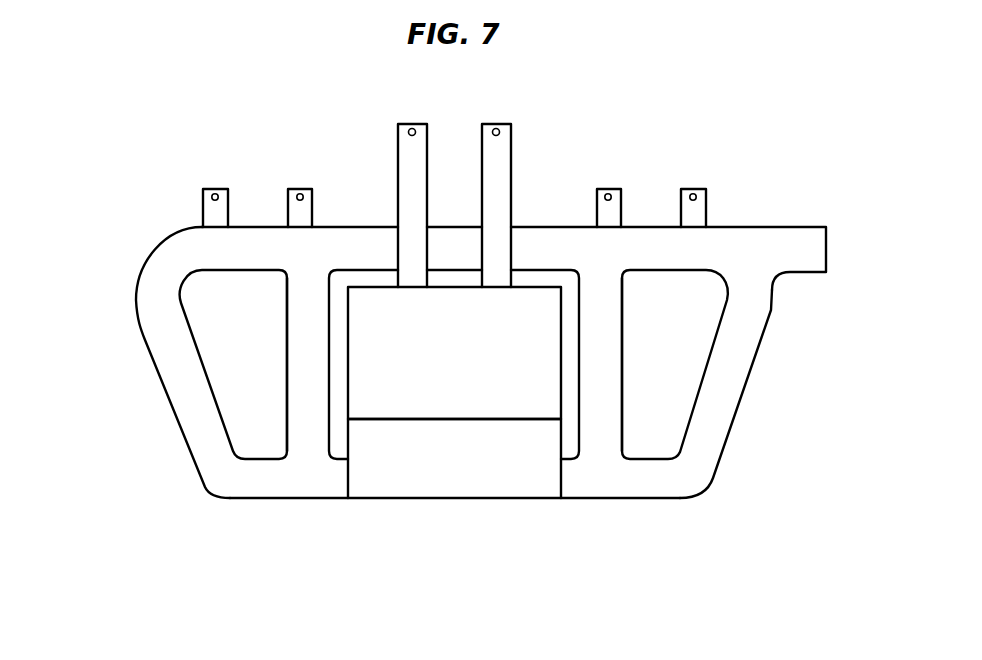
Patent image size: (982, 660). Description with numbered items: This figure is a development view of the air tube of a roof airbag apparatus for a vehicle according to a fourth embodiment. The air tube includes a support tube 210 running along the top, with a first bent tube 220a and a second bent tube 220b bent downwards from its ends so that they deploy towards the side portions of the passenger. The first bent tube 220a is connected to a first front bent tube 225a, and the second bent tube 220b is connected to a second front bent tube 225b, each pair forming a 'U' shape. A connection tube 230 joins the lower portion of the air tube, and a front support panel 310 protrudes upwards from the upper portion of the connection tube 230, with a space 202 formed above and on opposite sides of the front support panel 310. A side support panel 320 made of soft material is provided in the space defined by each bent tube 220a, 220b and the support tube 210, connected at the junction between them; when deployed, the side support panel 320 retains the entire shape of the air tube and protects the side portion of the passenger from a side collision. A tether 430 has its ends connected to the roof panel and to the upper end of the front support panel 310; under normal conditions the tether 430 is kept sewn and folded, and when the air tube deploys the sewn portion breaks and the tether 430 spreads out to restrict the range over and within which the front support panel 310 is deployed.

The support tube 210 is at (775, 238).
The first bent tube 220a is at (202, 434).
The second bent tube 220b is at (710, 427).
The first front bent tube 225a is at (308, 378).
The second front bent tube 225b is at (601, 365).
The space 202 is at (338, 427).
The connection tube 230 is at (500, 463).
The front support panel 310 is at (427, 380).
The side support panel 320 is at (227, 358).
The tether 430 is at (500, 153).